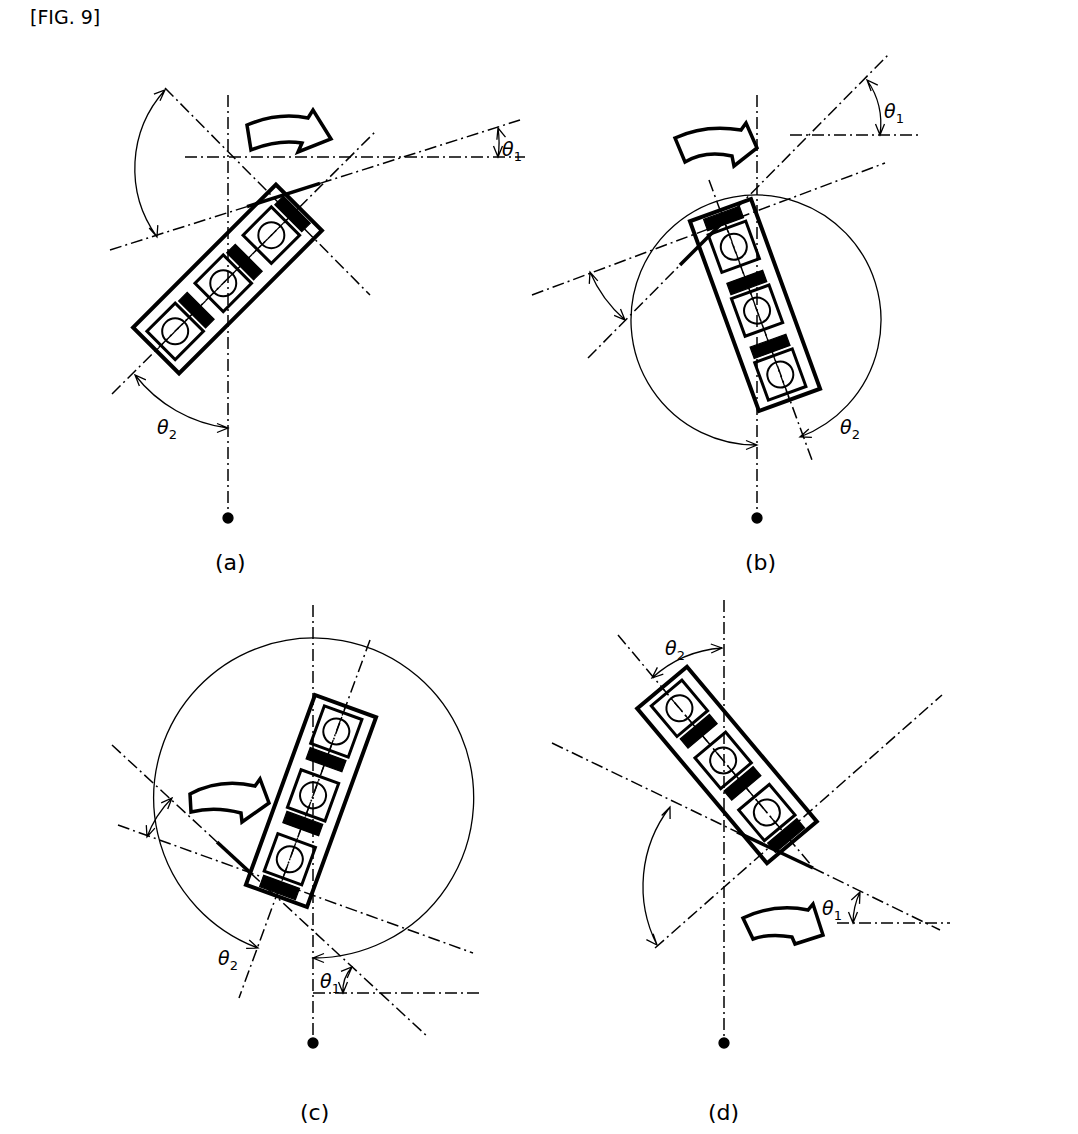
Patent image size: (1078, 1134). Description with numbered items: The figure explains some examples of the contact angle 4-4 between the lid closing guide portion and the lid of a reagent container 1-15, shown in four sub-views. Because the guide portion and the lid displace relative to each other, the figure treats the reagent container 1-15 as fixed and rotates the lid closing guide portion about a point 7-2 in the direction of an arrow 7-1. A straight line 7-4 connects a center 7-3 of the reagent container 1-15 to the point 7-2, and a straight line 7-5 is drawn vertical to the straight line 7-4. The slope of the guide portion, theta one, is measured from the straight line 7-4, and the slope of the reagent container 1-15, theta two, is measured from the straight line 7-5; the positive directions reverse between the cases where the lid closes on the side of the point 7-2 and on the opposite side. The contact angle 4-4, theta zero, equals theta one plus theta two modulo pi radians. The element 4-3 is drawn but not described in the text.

The contact angle 4-4 is at (137, 140).
The arrow 7-1 is at (278, 116).
The heading reference line 4-3 is at (250, 204).
The straight line vertical to the straight line 7-4 7-5 is at (460, 162).
The center 7-3 is at (192, 280).
The reagent container 1-15 is at (210, 289).
The point 7-2 is at (222, 513).
The straight line 7-4 is at (230, 478).